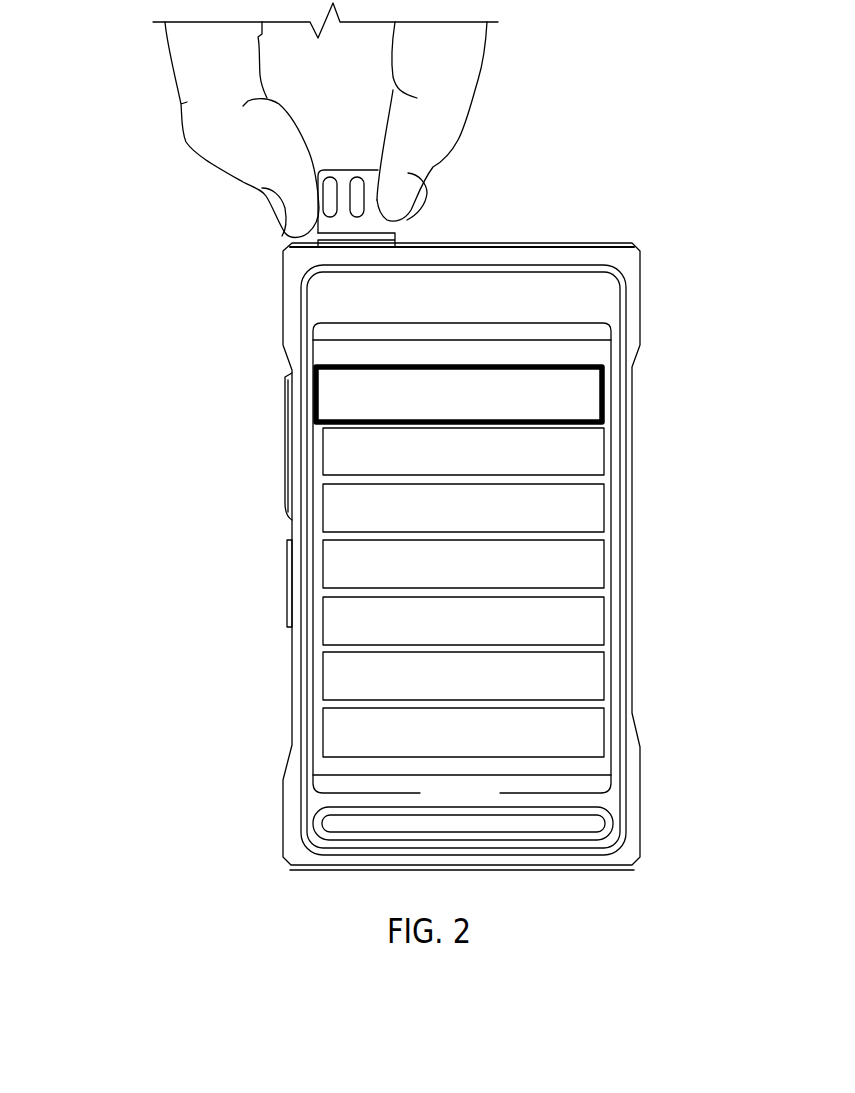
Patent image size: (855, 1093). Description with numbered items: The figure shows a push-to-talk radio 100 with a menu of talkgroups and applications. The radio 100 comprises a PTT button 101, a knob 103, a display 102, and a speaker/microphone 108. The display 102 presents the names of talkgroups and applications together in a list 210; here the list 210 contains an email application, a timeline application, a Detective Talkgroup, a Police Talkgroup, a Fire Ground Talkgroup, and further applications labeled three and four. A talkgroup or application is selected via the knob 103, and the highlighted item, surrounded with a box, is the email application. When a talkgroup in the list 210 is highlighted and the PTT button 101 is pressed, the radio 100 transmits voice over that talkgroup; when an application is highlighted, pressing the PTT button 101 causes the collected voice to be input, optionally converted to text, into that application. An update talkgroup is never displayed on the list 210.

The push-to-talk radio 100 is at (83, 46).
The PTT button 101 is at (287, 460).
The display 102 is at (481, 806).
The knob 103 is at (369, 170).
The speaker/microphone 108 is at (322, 823).
The list 210 is at (647, 355).